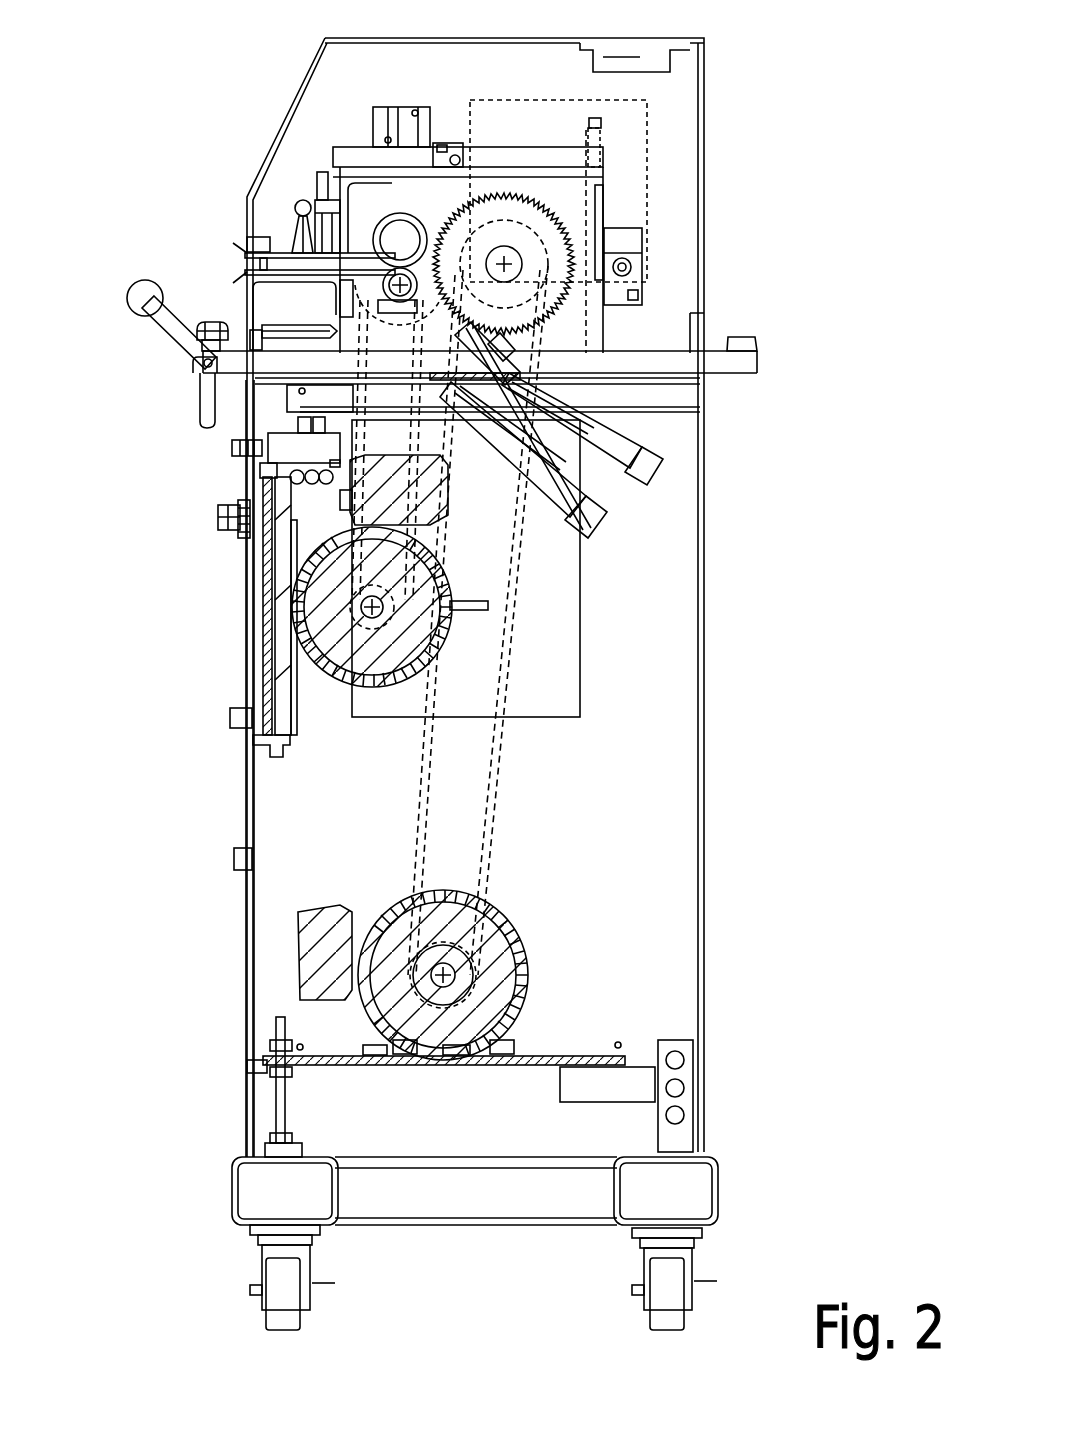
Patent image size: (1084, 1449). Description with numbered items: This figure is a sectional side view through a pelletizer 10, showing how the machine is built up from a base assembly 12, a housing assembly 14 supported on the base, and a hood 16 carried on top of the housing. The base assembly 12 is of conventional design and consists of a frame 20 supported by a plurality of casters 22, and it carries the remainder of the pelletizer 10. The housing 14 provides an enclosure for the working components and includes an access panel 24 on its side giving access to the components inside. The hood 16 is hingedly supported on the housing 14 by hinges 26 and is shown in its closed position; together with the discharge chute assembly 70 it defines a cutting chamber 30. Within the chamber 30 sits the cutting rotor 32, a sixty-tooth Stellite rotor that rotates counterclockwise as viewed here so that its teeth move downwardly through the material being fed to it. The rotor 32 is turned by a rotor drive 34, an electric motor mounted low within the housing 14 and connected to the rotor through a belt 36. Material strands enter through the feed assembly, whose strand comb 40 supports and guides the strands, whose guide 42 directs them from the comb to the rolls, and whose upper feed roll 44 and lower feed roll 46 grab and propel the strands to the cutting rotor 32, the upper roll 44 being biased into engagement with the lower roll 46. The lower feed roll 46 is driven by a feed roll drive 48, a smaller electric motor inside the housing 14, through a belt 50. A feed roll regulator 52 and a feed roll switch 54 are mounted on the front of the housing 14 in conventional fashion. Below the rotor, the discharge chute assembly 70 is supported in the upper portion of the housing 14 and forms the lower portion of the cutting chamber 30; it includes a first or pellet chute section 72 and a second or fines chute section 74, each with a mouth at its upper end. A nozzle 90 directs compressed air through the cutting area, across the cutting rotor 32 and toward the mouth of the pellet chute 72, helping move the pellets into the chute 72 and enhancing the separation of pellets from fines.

The pelletizer 10 is at (848, 548).
The base assembly 12 is at (726, 1193).
The housing assembly 14 is at (710, 781).
The hood 16 is at (708, 238).
The frame 20 is at (457, 1208).
The casters 22 is at (283, 1320).
The access panel 24 is at (243, 985).
The hinges 26 is at (708, 351).
The cutting chamber 30 is at (672, 128).
The cutting rotor 32 is at (572, 206).
The rotor drive 34 is at (522, 918).
The belt 36 is at (500, 790).
The strand comb 40 is at (148, 295).
The guide 42 is at (284, 252).
The upper feed roll 44 is at (405, 235).
The lower feed roll 46 is at (393, 352).
The feed roll drive 48 is at (337, 690).
The belt 50 is at (423, 447).
The feed roll regulator 52 is at (222, 516).
The feed roll switch 54 is at (232, 447).
The discharge chute assembly 70 is at (636, 504).
The pellet chute section 72 is at (508, 462).
The fines chute section 74 is at (620, 401).
The nozzle 90 is at (458, 146).